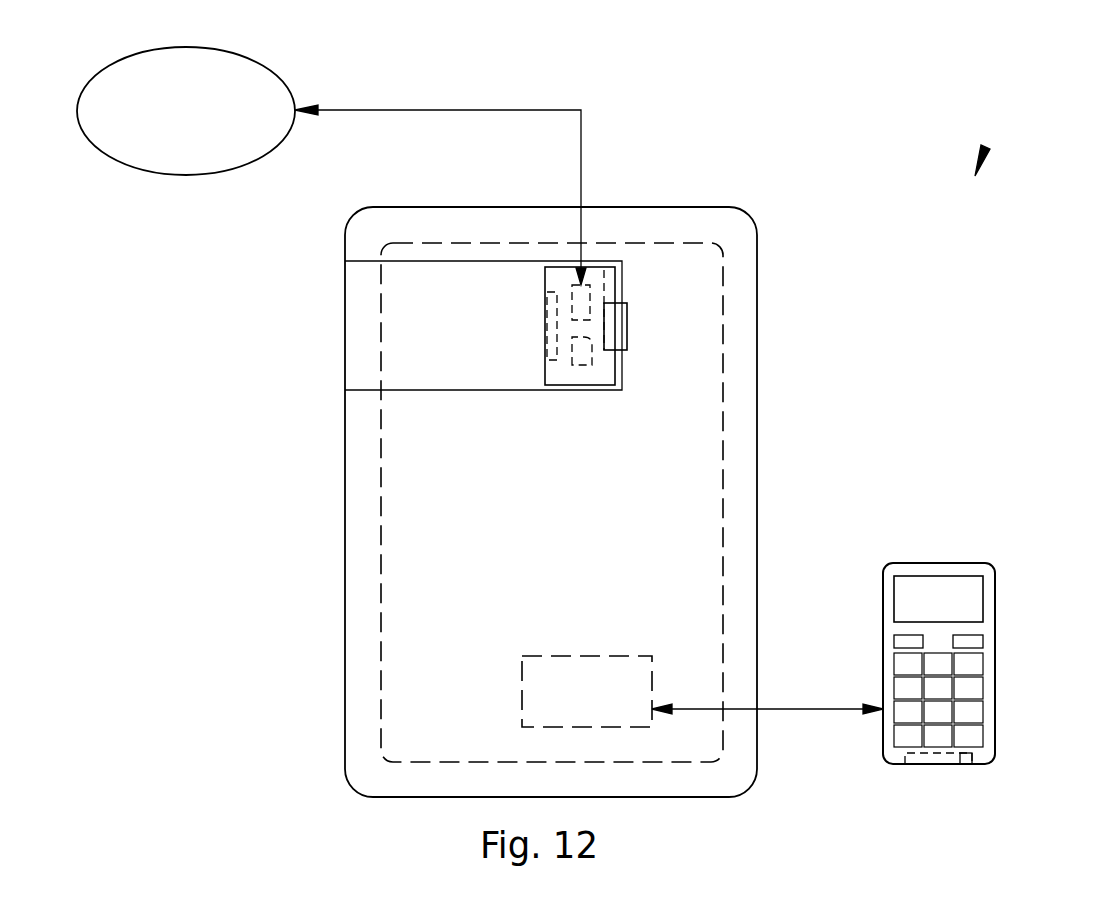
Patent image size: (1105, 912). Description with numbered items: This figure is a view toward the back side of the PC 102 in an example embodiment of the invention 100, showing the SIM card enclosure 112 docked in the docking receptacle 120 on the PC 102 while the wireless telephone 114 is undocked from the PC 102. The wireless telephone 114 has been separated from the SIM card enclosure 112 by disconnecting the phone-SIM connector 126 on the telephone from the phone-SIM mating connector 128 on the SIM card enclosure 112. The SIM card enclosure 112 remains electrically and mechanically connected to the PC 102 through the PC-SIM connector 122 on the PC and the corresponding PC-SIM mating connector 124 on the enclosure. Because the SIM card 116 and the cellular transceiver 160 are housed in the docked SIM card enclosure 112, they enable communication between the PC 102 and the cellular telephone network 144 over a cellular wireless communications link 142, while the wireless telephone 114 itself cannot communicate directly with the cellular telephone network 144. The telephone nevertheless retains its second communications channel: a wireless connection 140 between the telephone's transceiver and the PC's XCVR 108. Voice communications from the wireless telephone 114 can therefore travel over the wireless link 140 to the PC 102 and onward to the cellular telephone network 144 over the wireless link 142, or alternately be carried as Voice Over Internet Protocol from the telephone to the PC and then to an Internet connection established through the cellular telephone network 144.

The invention 100 is at (987, 143).
The PC 102 is at (757, 270).
The XCVR 108 is at (520, 699).
The SIM card enclosure 112 is at (607, 386).
The wireless telephone 114 is at (937, 563).
The SIM card 116 is at (580, 386).
The docking receptacle 120 is at (430, 392).
The PC-SIM connector 122 is at (628, 302).
The PC-SIM mating connector 124 is at (610, 303).
The phone-SIM connector 126 is at (962, 766).
The phone-SIM mating connector 128 is at (556, 344).
The wireless connection 140 is at (783, 709).
The cellular wireless communications link 142 is at (323, 112).
The cellular telephone network 144 is at (134, 120).
The cellular transceiver 160 is at (587, 283).